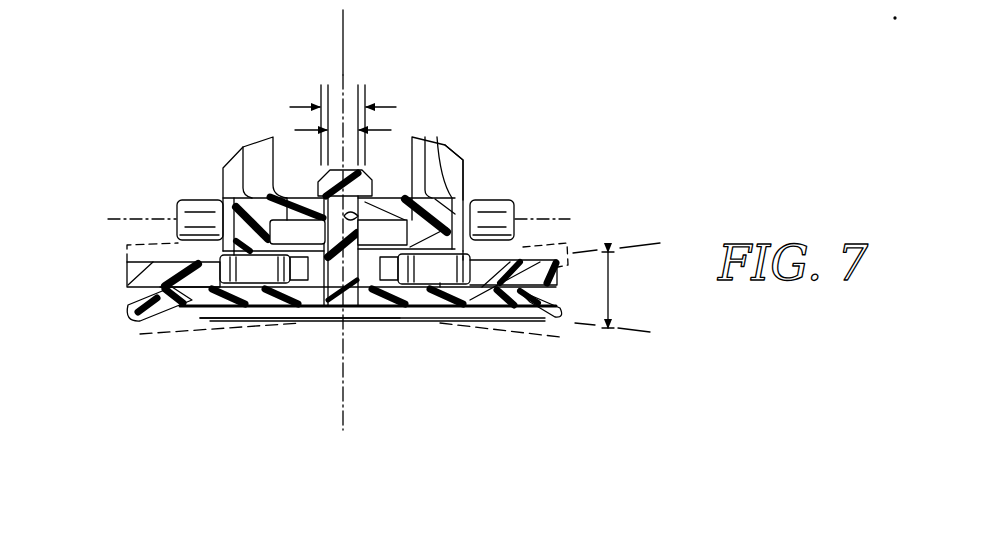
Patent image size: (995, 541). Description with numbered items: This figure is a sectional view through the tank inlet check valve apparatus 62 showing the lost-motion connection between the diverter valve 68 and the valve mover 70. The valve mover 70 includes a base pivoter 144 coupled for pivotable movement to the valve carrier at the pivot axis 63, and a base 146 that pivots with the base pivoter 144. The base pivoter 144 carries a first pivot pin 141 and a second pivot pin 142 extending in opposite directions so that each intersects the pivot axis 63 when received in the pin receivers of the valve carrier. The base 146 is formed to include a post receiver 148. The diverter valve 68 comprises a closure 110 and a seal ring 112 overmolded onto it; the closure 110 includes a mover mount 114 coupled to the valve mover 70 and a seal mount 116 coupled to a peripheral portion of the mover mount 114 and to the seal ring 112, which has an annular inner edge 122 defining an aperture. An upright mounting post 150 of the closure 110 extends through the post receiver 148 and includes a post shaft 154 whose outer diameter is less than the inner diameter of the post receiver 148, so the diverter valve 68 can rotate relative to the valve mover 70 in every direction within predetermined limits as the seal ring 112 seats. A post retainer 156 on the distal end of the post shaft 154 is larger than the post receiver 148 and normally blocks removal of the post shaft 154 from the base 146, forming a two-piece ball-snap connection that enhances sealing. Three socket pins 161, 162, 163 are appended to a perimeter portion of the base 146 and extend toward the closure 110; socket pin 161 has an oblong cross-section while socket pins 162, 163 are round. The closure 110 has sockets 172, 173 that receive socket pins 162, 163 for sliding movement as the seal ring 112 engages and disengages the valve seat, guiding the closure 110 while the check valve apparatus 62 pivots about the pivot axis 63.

The socket pin 161 is at (322, 82).
The base pivoter 144 is at (250, 135).
The first pivot pin 141 is at (192, 222).
The seal mount 116 is at (152, 262).
The post retainer 156 is at (325, 183).
The mounting post 150 is at (390, 162).
The base 146 is at (425, 135).
The valve mover 70 is at (472, 153).
The tank inlet check valve apparatus 62 is at (540, 162).
The second pivot pin 142 is at (490, 200).
The pivot axis 63 is at (568, 216).
The closure 110 is at (121, 277).
The diverter valve 68 is at (121, 297).
The seal ring 112 is at (130, 325).
The socket pin 162 is at (257, 252).
The mover mount 114 is at (296, 330).
The socket 172 is at (295, 270).
The socket 173 is at (372, 263).
The annular inner edge 122 is at (492, 268).
The socket pin 163 is at (443, 254).
The post shaft 154 is at (335, 240).
The post receiver 148 is at (340, 230).